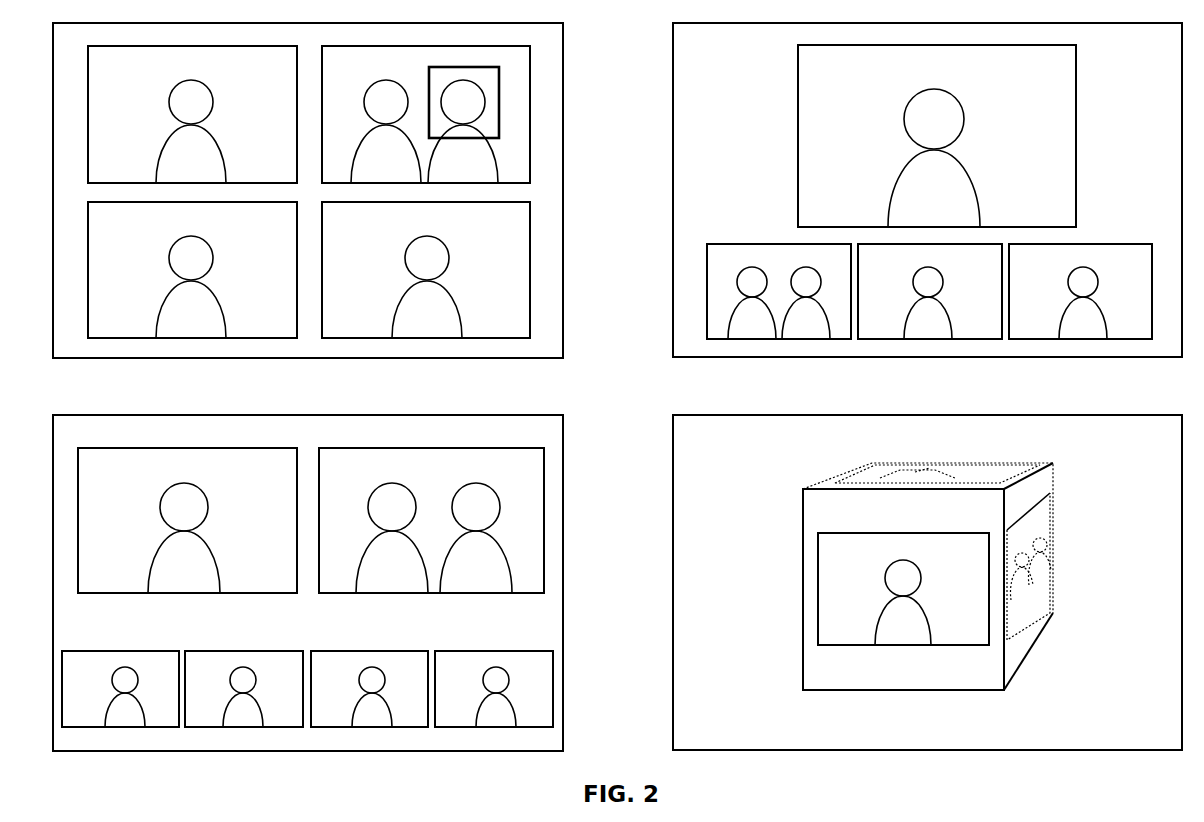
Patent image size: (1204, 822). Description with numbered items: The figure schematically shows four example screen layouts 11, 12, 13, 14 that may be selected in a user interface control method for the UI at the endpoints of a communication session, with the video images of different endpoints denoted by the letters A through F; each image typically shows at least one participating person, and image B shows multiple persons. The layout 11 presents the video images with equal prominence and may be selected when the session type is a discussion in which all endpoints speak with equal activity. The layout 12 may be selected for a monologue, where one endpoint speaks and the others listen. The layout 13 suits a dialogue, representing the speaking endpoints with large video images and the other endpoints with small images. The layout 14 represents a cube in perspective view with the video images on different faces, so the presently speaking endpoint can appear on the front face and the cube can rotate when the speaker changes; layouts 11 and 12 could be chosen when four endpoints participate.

The visual layout 11 is at (563, 150).
The visual layout 12 is at (673, 244).
The visual layout 13 is at (563, 567).
The visual layout 14 is at (673, 656).